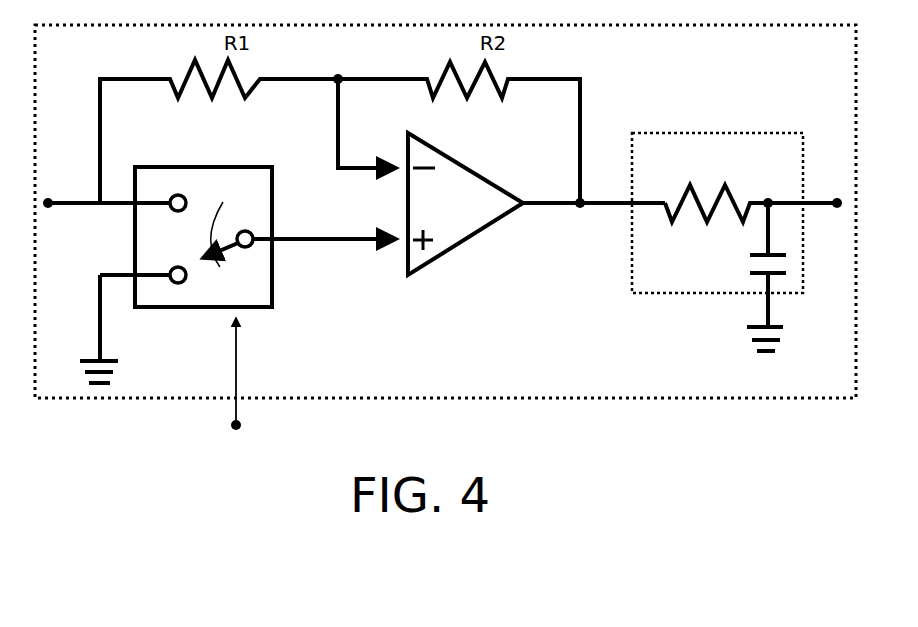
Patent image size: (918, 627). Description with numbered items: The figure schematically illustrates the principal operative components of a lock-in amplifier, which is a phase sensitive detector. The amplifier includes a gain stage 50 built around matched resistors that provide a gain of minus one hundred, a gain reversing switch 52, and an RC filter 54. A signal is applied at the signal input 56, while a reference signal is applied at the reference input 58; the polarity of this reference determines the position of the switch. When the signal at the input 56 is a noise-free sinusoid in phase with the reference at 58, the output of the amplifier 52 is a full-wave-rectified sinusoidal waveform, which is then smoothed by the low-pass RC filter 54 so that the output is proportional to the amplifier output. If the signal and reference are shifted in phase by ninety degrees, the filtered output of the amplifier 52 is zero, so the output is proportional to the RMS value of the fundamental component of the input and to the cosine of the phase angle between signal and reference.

The gain stage 50 is at (270, 296).
The gain reversing switch 52 is at (466, 237).
The RC filter 54 is at (668, 133).
The signal input 56 is at (76, 206).
The reference input 58 is at (445, 225).